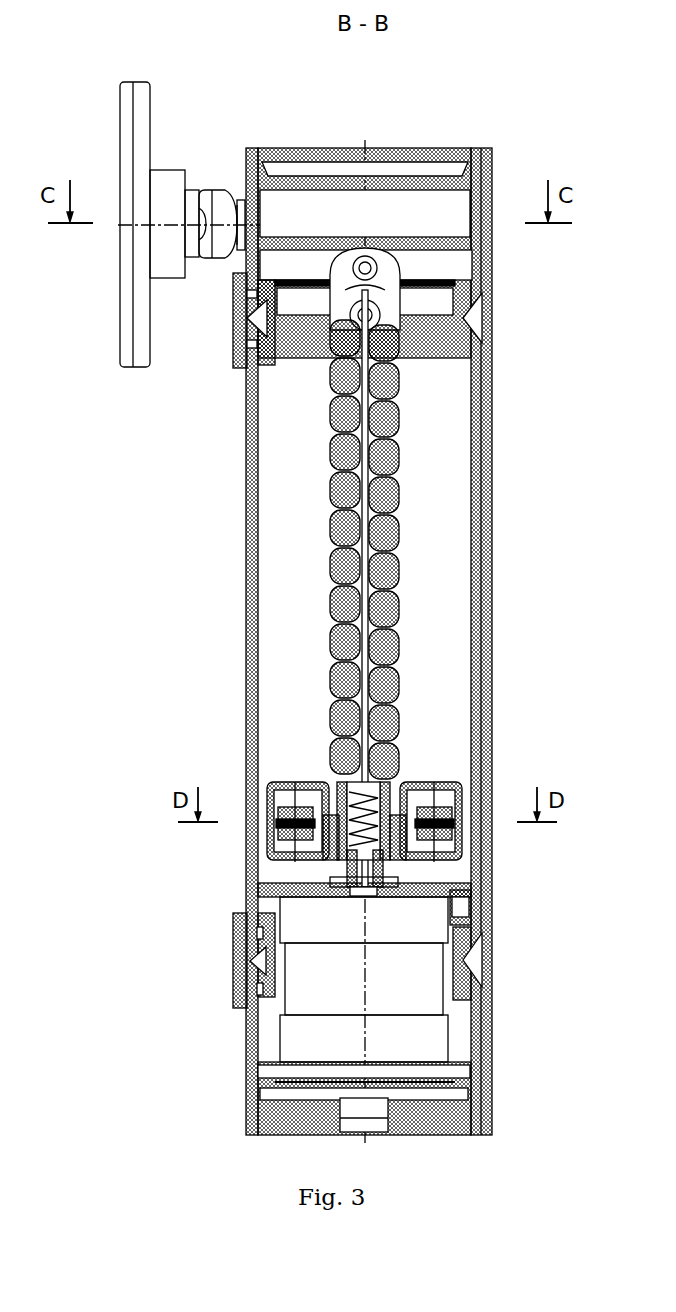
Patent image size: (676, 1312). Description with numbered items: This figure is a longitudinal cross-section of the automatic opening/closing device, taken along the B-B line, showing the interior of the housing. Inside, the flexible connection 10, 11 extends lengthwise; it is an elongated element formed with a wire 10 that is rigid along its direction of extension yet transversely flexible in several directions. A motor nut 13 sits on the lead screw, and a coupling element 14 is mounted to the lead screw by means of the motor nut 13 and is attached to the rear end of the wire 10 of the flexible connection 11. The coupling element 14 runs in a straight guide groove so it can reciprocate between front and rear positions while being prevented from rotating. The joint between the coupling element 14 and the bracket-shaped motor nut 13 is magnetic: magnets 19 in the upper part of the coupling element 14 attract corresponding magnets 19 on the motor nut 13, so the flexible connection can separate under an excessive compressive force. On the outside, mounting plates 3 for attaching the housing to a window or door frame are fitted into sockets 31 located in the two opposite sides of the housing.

The mounting plate 3 is at (233, 312).
The socket 31 is at (480, 313).
The wire of the flexible connection 10 is at (363, 640).
The flexible connection 11 is at (337, 530).
The motor nut 13 is at (318, 790).
The coupling element 14 is at (267, 832).
The magnets 19 is at (288, 804).